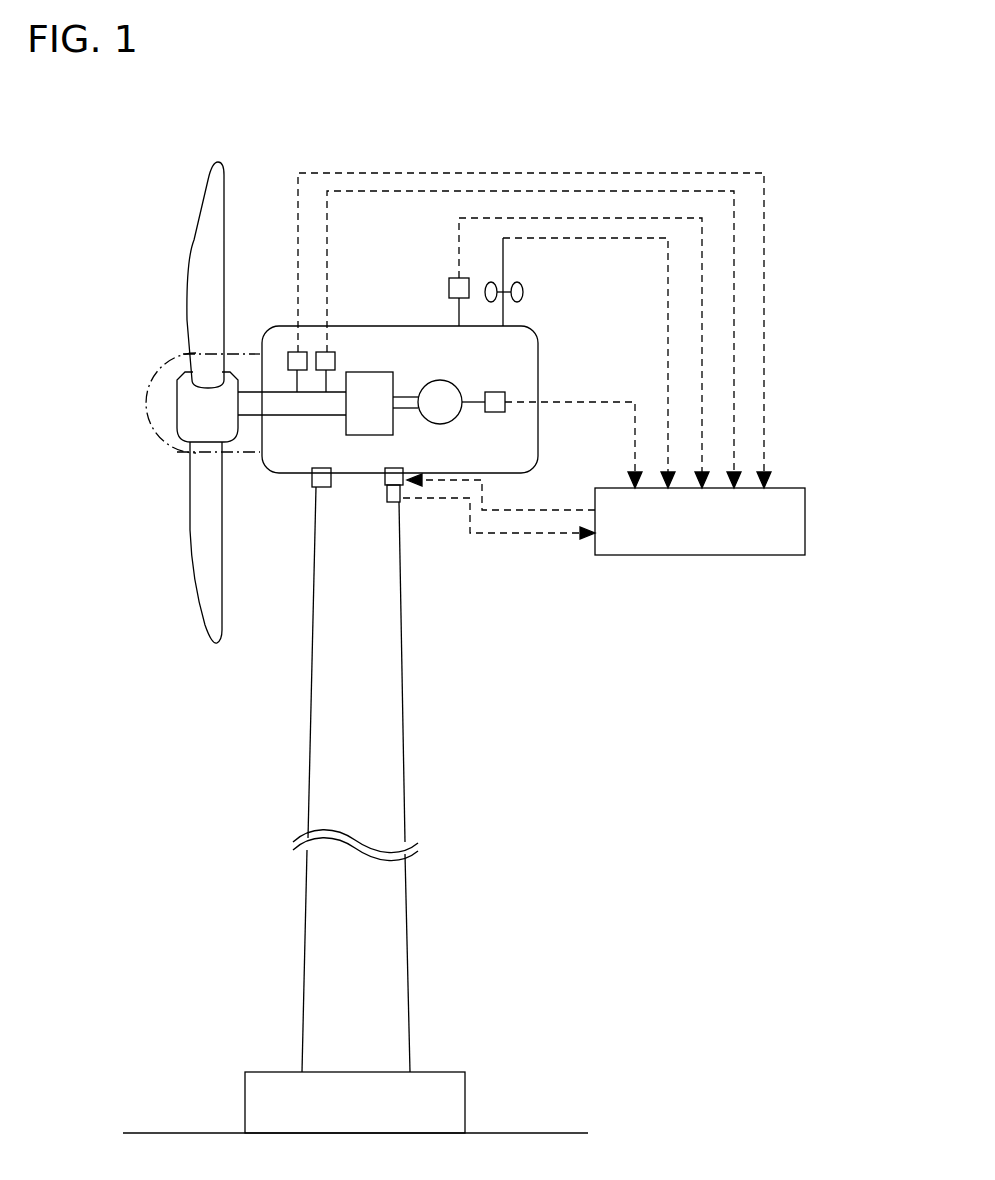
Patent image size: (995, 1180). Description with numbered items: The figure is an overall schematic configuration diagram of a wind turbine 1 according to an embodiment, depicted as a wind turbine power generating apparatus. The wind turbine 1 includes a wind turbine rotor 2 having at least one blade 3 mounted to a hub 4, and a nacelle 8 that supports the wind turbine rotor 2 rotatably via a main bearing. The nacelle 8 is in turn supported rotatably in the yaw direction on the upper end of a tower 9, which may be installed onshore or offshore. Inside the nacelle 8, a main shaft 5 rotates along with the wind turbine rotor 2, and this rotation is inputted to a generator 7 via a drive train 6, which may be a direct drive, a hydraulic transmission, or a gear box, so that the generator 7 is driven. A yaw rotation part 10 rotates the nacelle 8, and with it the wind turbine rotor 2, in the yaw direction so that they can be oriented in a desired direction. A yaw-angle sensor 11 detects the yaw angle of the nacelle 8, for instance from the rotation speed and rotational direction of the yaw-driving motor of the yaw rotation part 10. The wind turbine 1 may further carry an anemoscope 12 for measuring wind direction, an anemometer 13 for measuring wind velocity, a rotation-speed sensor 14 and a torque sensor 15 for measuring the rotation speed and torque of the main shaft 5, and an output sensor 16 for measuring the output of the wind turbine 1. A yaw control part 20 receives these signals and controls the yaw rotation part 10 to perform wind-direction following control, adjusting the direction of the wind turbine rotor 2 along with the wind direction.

The wind turbine 1 is at (96, 229).
The wind turbine rotor 2 is at (139, 357).
The blade 3 is at (195, 248).
The hub 4 is at (177, 398).
The main shaft 5 is at (285, 417).
The drive train 6 is at (372, 372).
The generator 7 is at (425, 380).
The nacelle 8 is at (539, 358).
The tower 9 is at (403, 668).
The yaw rotation part 10 is at (312, 478).
The yaw-angle sensor 11 is at (393, 502).
The anemoscope 12 is at (449, 277).
The anemometer 13 is at (527, 288).
The rotation-speed sensor 14 is at (297, 352).
The torque sensor 15 is at (326, 352).
The output sensor 16 is at (507, 410).
The yaw control part 20 is at (807, 512).